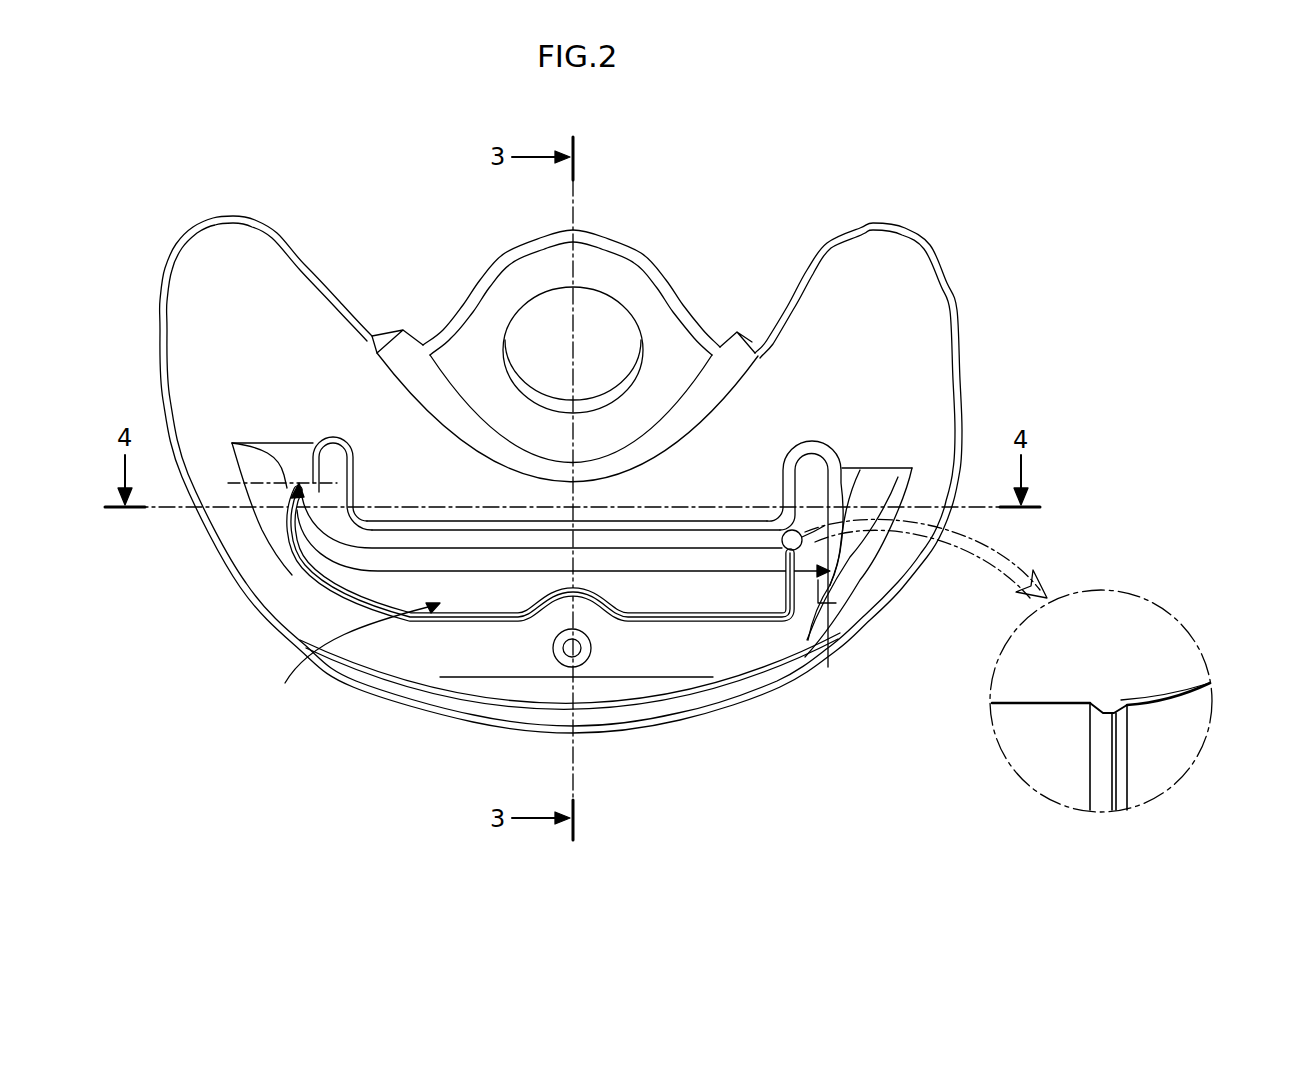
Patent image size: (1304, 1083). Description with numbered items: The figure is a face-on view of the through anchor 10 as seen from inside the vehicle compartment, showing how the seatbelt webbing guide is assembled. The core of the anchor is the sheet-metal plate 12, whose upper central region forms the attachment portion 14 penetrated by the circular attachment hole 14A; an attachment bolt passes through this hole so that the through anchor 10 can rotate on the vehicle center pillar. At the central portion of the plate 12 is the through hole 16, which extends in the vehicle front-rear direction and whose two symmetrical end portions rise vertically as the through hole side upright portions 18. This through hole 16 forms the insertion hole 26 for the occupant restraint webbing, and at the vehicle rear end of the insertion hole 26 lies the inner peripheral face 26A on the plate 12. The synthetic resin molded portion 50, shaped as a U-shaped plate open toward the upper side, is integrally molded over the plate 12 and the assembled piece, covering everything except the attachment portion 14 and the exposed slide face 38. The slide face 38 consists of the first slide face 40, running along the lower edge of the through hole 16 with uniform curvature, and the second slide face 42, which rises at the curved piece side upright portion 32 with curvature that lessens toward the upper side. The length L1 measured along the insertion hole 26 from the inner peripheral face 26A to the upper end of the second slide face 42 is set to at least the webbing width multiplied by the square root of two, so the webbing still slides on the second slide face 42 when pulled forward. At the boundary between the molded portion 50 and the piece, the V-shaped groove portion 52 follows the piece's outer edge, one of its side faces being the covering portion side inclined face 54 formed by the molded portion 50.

The through anchor 10 is at (843, 178).
The plate 12 is at (661, 255).
The attachment portion 14 is at (653, 317).
The attachment hole 14A is at (527, 306).
The through hole 16 is at (642, 546).
The through hole side upright portion 18 is at (330, 457).
The insertion hole 26 is at (808, 455).
The inner peripheral face 26A is at (846, 482).
The piece side upright portion 32 is at (322, 537).
The slide face 38 is at (635, 646).
The first slide face 40 is at (673, 600).
The second slide face 42 is at (307, 547).
The molded portion 50 is at (927, 275).
The groove portion 52 is at (1109, 710).
The covering portion side inclined face 54 is at (1127, 700).
The length L1 is at (351, 658).